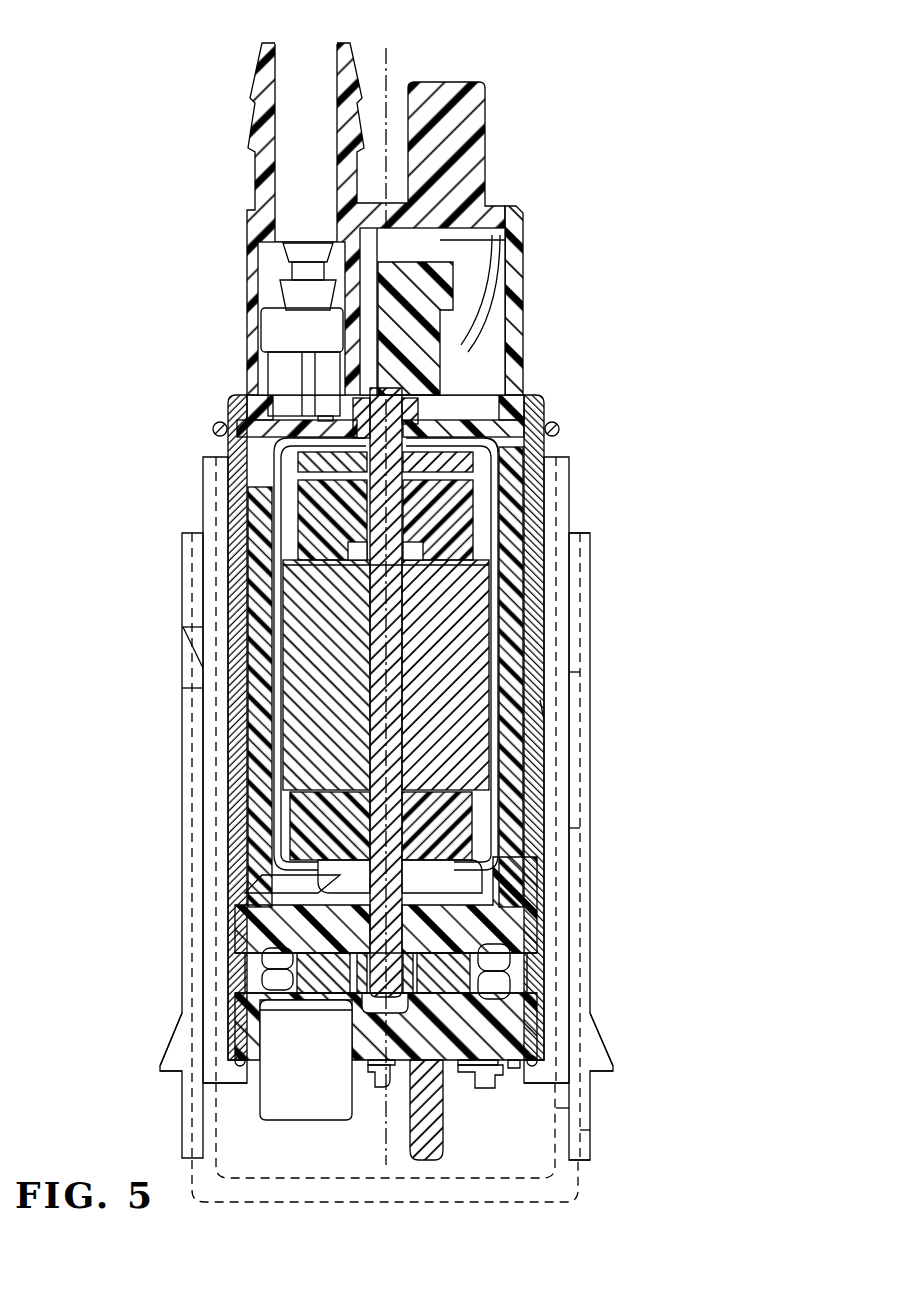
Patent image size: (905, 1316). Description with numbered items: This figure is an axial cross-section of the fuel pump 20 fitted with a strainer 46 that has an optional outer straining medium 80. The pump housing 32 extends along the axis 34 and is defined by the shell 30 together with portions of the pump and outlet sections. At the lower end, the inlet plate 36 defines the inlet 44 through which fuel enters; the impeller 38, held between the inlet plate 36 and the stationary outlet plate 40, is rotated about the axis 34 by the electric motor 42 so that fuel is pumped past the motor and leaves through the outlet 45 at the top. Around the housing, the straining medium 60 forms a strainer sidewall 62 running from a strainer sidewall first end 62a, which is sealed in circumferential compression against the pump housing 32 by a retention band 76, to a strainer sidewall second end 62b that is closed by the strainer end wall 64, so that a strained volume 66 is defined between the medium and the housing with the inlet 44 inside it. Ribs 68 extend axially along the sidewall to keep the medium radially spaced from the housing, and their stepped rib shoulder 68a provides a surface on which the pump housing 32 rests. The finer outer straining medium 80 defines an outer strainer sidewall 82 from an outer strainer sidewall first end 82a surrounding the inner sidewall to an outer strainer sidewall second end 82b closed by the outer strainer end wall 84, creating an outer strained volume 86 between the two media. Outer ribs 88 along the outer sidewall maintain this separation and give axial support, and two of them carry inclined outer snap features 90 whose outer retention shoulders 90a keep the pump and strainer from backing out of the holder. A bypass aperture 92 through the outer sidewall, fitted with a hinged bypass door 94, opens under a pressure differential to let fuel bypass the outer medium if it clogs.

The fuel pump 20 is at (634, 60).
The outlet 45 is at (297, 52).
The axis 34 is at (388, 65).
The pump housing 32 is at (530, 268).
The retention band 76 is at (556, 428).
The strainer sidewall first end 62a is at (548, 440).
The ribs 68 is at (569, 476).
The outer strainer sidewall first end 82a is at (590, 533).
The outer ribs 88 is at (182, 578).
The bypass aperture 92 is at (183, 640).
The bypass door 94 is at (200, 662).
The strained volume 66 is at (552, 608).
The outer strained volume 86 is at (575, 672).
The shell 30 is at (545, 712).
The electric motor 42 is at (490, 708).
The strainer sidewall 62 is at (558, 778).
The strainer 46 is at (582, 828).
The outer strainer sidewall 82 is at (581, 857).
The outlet plate 40 is at (522, 908).
The impeller 38 is at (508, 978).
The inlet plate 36 is at (530, 1035).
The outer snap features 90 is at (598, 1045).
The outer retention shoulders 90a is at (613, 1080).
The rib shoulder 68a is at (547, 1060).
The straining medium 60 is at (558, 1108).
The outer straining medium 80 is at (582, 1130).
The strainer sidewall second end 62b is at (545, 1063).
The outer strainer sidewall second end 82b is at (580, 1165).
The strainer end wall 64 is at (508, 1178).
The inlet 44 is at (314, 1107).
The outer strainer end wall 84 is at (245, 1200).